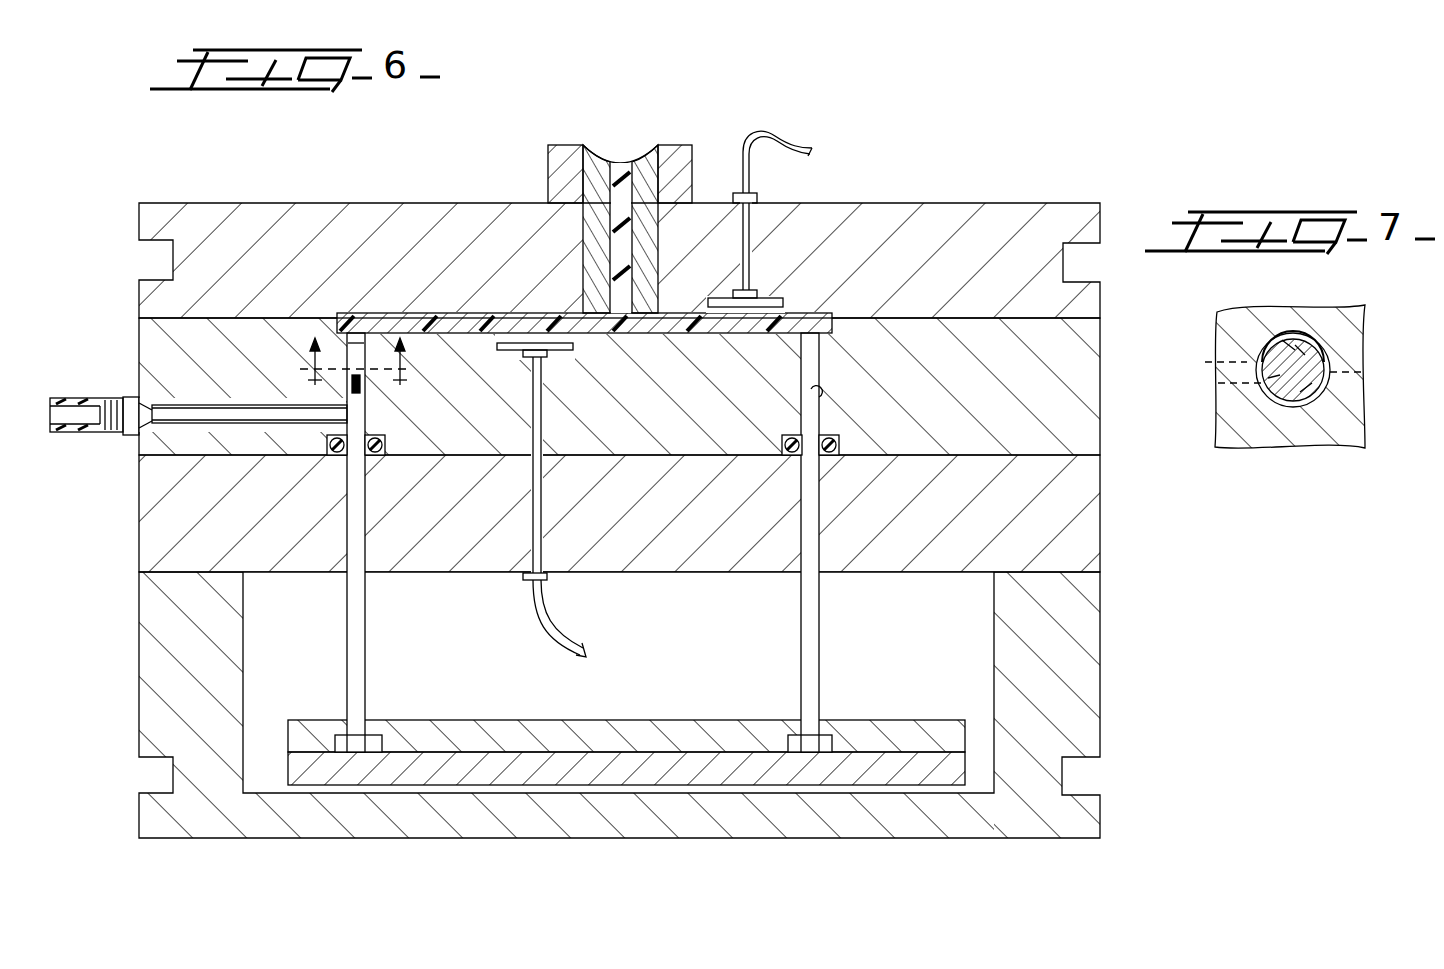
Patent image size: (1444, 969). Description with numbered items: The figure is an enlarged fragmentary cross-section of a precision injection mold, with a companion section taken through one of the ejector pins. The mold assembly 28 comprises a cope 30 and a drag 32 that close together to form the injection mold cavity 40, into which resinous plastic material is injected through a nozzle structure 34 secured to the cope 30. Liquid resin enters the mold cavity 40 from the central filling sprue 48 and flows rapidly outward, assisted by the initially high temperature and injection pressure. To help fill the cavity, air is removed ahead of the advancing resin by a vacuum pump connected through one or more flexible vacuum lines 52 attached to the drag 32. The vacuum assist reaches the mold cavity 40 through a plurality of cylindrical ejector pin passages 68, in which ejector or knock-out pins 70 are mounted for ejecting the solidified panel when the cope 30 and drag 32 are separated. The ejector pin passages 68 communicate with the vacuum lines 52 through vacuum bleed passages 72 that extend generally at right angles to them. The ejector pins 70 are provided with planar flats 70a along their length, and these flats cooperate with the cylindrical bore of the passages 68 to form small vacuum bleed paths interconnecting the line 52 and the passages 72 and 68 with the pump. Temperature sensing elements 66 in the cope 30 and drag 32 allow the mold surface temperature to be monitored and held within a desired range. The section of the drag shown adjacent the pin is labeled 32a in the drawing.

In FIG. 6, the mold assembly 28 is at (710, 879).
In FIG. 6, the cope 30 is at (905, 203).
In FIG. 7, the drag 32 is at (1322, 430).
In FIG. 6, the intermediate mold block 32a is at (1102, 412).
In FIG. 6, the nozzle structure 34 is at (692, 170).
In FIG. 6, the mold cavity 40 is at (363, 318).
In FIG. 6, the central filling sprue 48 is at (613, 270).
In FIG. 6, the vacuum lines 52 is at (78, 398).
In FIG. 6, the temperature sensing elements 66 is at (760, 297).
In FIG. 6, the ejector pin passages 68 is at (357, 386).
In FIG. 7, the ejector pin passages 68 is at (1298, 347).
In FIG. 6, the ejector pins 70 is at (357, 600).
In FIG. 7, the ejector pins 70 is at (1330, 388).
In FIG. 6, the planar flats 70a is at (350, 343).
In FIG. 7, the planar flats 70a is at (1280, 337).
In FIG. 6, the vacuum bleed passages 72 is at (172, 417).
In FIG. 7, the vacuum bleed passages 72 is at (1206, 362).